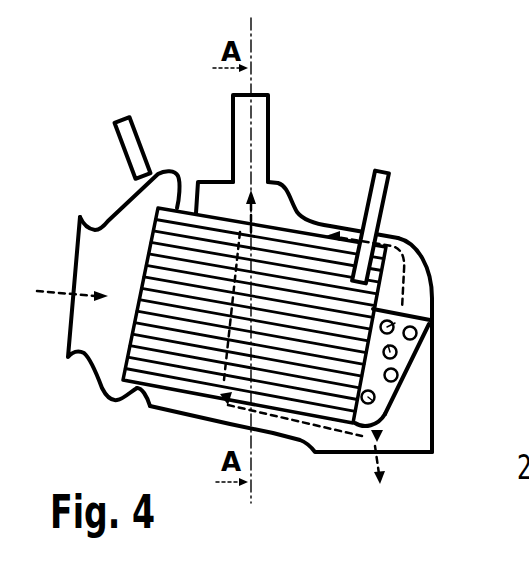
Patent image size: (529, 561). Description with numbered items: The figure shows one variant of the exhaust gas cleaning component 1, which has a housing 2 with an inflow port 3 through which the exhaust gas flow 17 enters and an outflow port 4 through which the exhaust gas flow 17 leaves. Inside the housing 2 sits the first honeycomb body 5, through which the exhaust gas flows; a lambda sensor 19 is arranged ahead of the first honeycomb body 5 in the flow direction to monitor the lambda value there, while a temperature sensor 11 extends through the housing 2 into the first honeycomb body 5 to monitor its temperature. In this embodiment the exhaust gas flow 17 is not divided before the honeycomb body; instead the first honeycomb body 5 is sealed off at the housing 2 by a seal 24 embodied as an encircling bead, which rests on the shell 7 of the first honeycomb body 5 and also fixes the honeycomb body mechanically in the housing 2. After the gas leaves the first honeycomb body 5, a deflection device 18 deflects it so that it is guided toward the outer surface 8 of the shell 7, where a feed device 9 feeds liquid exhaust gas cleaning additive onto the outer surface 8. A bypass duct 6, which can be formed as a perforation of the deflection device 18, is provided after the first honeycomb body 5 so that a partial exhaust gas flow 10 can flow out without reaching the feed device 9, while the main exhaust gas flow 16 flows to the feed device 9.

The exhaust gas cleaning component 1 is at (146, 93).
The housing 2 is at (397, 234).
The inflow port 3 is at (117, 207).
The outflow port 4 is at (403, 455).
The first honeycomb body 5 is at (140, 297).
The bypass duct 6 is at (412, 378).
The shell 7 is at (290, 233).
The outer surface 8 is at (304, 240).
The feed device 9 is at (272, 125).
The partial exhaust gas flow 10 is at (388, 422).
The temperature sensor 11 is at (388, 191).
The main exhaust gas flow 16 is at (340, 234).
The exhaust gas flow 17 is at (56, 294).
The deflection device 18 is at (418, 360).
The lambda sensor 19 is at (143, 141).
The seal 24 is at (143, 392).